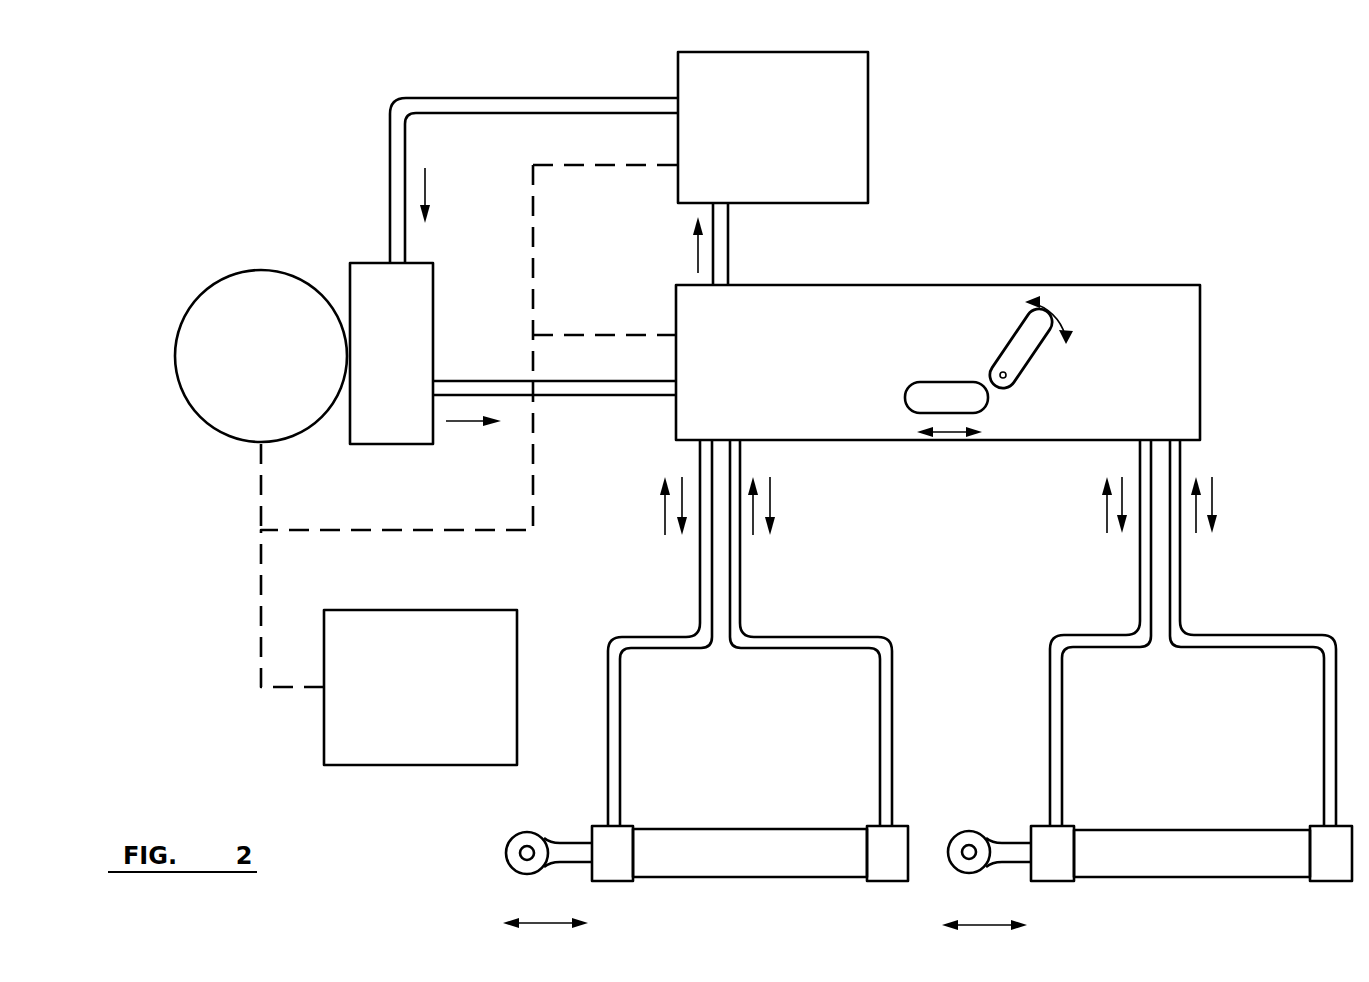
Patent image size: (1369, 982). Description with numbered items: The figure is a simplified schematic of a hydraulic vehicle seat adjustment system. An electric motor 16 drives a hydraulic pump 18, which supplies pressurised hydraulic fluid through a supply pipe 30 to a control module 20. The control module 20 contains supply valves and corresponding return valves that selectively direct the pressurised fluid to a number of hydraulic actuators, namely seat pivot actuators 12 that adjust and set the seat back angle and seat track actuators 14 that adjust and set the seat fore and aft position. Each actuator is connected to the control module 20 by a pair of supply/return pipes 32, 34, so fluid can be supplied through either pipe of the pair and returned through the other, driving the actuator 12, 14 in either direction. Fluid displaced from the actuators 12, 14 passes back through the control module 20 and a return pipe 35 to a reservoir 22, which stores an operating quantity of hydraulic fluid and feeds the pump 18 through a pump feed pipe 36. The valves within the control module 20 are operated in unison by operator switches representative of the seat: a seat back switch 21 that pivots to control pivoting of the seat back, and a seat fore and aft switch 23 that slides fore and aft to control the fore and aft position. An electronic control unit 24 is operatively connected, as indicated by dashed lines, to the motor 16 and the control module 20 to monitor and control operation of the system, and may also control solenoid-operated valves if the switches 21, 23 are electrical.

The seat pivot actuator 12 is at (731, 867).
The seat track actuator 14 is at (1172, 867).
The electric motor 16 is at (247, 364).
The hydraulic pump 18 is at (374, 364).
The control module 20 is at (1118, 300).
The seat back switch 21 is at (1017, 350).
The reservoir 22 is at (759, 141).
The seat fore and aft switch 23 is at (946, 400).
The electronic control unit 24 is at (408, 702).
The supply pipe 30 is at (581, 388).
The supply/return pipes 32 is at (700, 578).
The supply/return pipes 34 is at (1140, 578).
The return pipe 35 is at (718, 243).
The pump feed pipe 36 is at (397, 160).